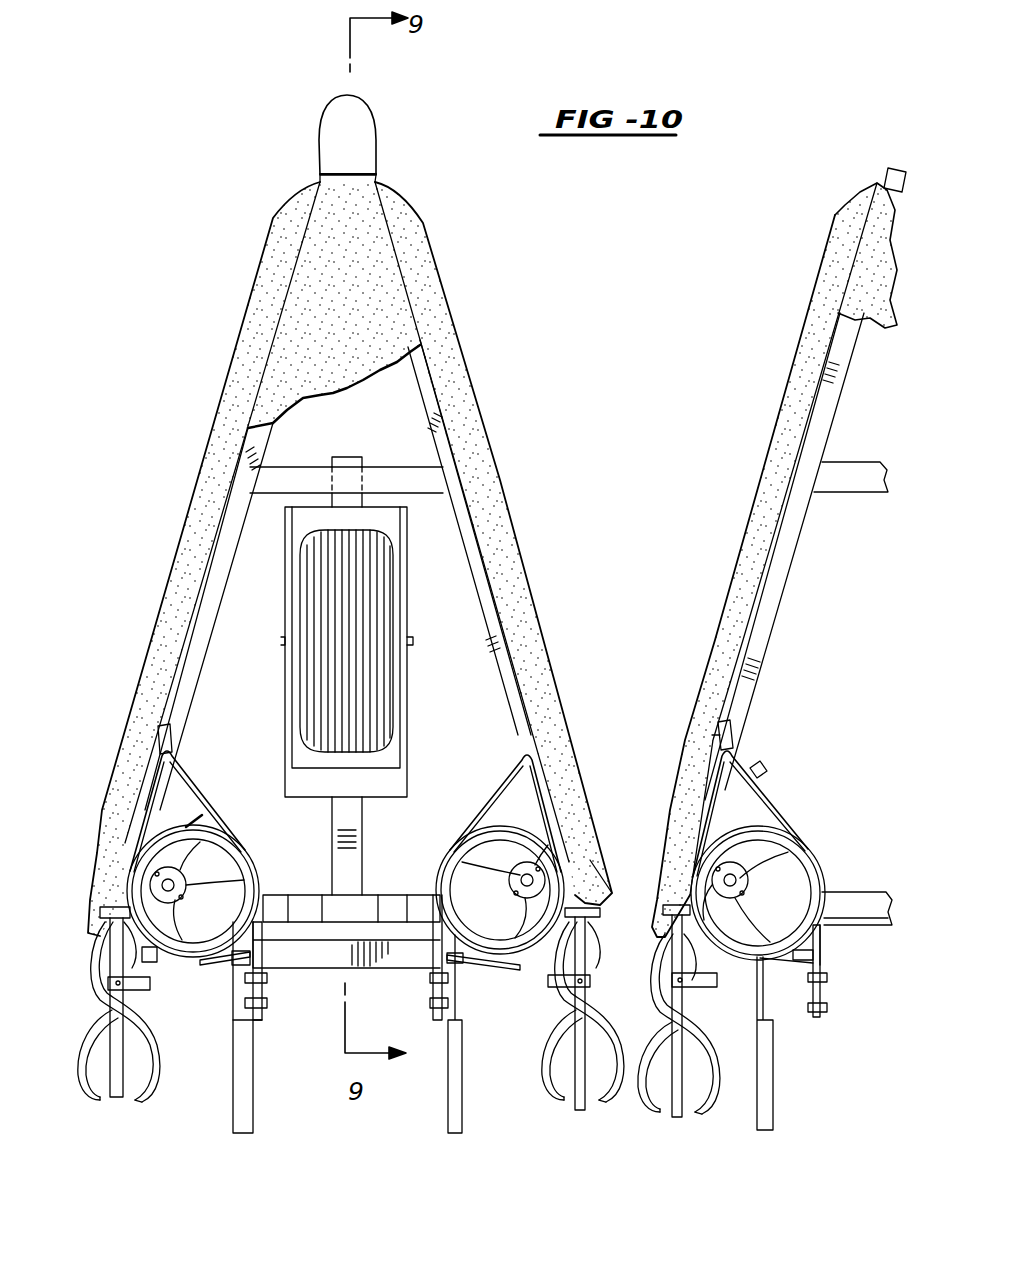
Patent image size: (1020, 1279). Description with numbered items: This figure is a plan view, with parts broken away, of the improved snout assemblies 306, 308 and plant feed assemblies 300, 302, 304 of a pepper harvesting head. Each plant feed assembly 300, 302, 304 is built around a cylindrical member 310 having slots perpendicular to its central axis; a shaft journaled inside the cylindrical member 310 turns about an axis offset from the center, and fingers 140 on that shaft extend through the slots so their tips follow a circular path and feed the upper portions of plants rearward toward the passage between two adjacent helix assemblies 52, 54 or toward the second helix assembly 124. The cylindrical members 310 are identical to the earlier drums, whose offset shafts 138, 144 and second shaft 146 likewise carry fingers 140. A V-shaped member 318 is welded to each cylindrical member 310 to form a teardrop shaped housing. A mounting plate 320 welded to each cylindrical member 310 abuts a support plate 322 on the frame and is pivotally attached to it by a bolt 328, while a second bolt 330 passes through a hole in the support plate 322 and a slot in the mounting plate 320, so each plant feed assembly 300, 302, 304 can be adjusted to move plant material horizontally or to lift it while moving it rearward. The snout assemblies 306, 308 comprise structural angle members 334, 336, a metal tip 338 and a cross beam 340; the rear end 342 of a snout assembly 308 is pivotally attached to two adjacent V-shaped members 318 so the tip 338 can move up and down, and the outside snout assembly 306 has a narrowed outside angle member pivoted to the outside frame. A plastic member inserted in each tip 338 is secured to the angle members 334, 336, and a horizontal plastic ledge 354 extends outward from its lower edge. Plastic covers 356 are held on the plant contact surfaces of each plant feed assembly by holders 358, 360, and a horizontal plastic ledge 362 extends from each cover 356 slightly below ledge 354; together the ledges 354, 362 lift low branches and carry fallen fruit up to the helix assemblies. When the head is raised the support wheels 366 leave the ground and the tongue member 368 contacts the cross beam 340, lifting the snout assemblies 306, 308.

The helix assembly 52 is at (672, 1122).
The helix assembly 54 is at (580, 1112).
The second helix assembly 124 is at (118, 1110).
The shaft 138 is at (732, 875).
The fingers 140 is at (110, 845).
The shaft 144 is at (583, 885).
The second shaft 146 is at (178, 885).
The plant feed assembly 300 is at (142, 660).
The plant feed assembly 302 is at (488, 965).
The plant feed assembly 304 is at (828, 877).
The snout assembly 306 is at (762, 268).
The snout assembly 308 is at (548, 302).
The cylindrical member 310 is at (202, 826).
The V-shaped member 318 is at (215, 795).
The mounting plate 320 is at (240, 1028).
The support plate 322 is at (428, 940).
The bolt 328 is at (830, 1007).
The second bolt 330 is at (827, 977).
The structural angle member 334 is at (777, 455).
The structural angle member 336 is at (470, 528).
The metal tip 338 is at (366, 120).
The cross beam 340 is at (272, 462).
The rear end 342 is at (732, 728).
The horizontal plastic ledge 354 is at (258, 322).
The plastic cover 356 is at (195, 960).
The holder 358 is at (765, 770).
The holder 360 is at (232, 975).
The horizontal plastic ledge 362 is at (140, 792).
The support wheel 366 is at (300, 540).
The tongue member 368 is at (358, 458).